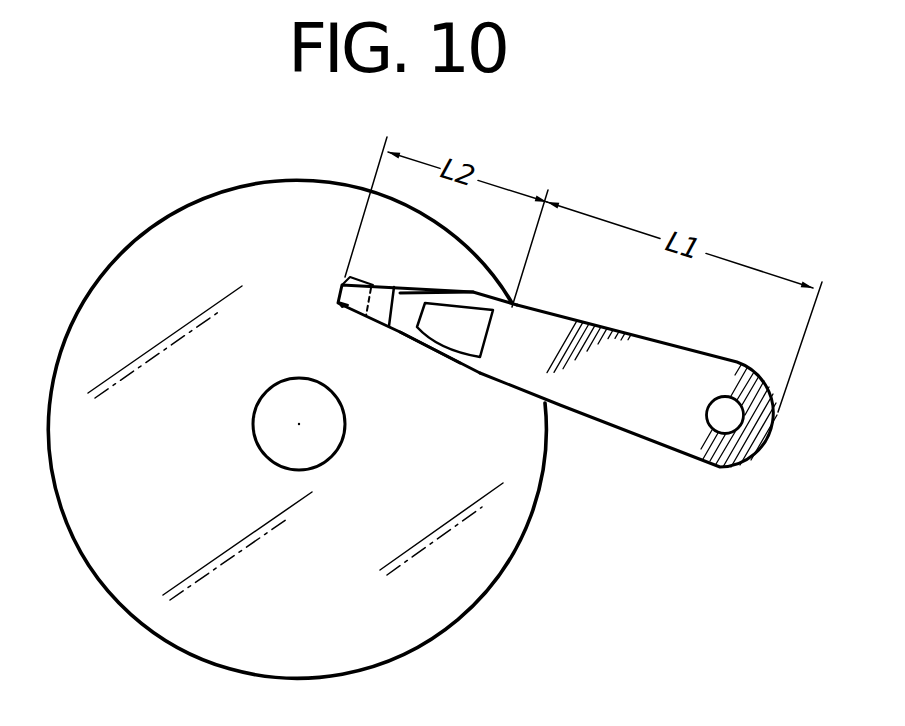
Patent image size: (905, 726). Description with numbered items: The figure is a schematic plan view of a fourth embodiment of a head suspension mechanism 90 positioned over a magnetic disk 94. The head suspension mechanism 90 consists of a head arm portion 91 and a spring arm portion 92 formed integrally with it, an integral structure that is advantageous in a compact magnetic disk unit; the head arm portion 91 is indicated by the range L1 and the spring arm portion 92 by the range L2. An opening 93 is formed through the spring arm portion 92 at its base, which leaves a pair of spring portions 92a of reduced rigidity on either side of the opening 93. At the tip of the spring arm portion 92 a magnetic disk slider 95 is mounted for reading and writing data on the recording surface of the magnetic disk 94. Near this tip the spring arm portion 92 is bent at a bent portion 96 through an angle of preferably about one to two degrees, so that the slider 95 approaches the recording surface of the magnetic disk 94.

The head suspension mechanism 90 is at (681, 465).
The head arm portion 91 is at (643, 442).
The spring arm portion 92 is at (413, 293).
The spring portions 92a is at (441, 293).
The opening 93 is at (465, 348).
The magnetic disk 94 is at (450, 608).
The magnetic disk slider 95 is at (340, 306).
The bent portion 96 is at (397, 288).